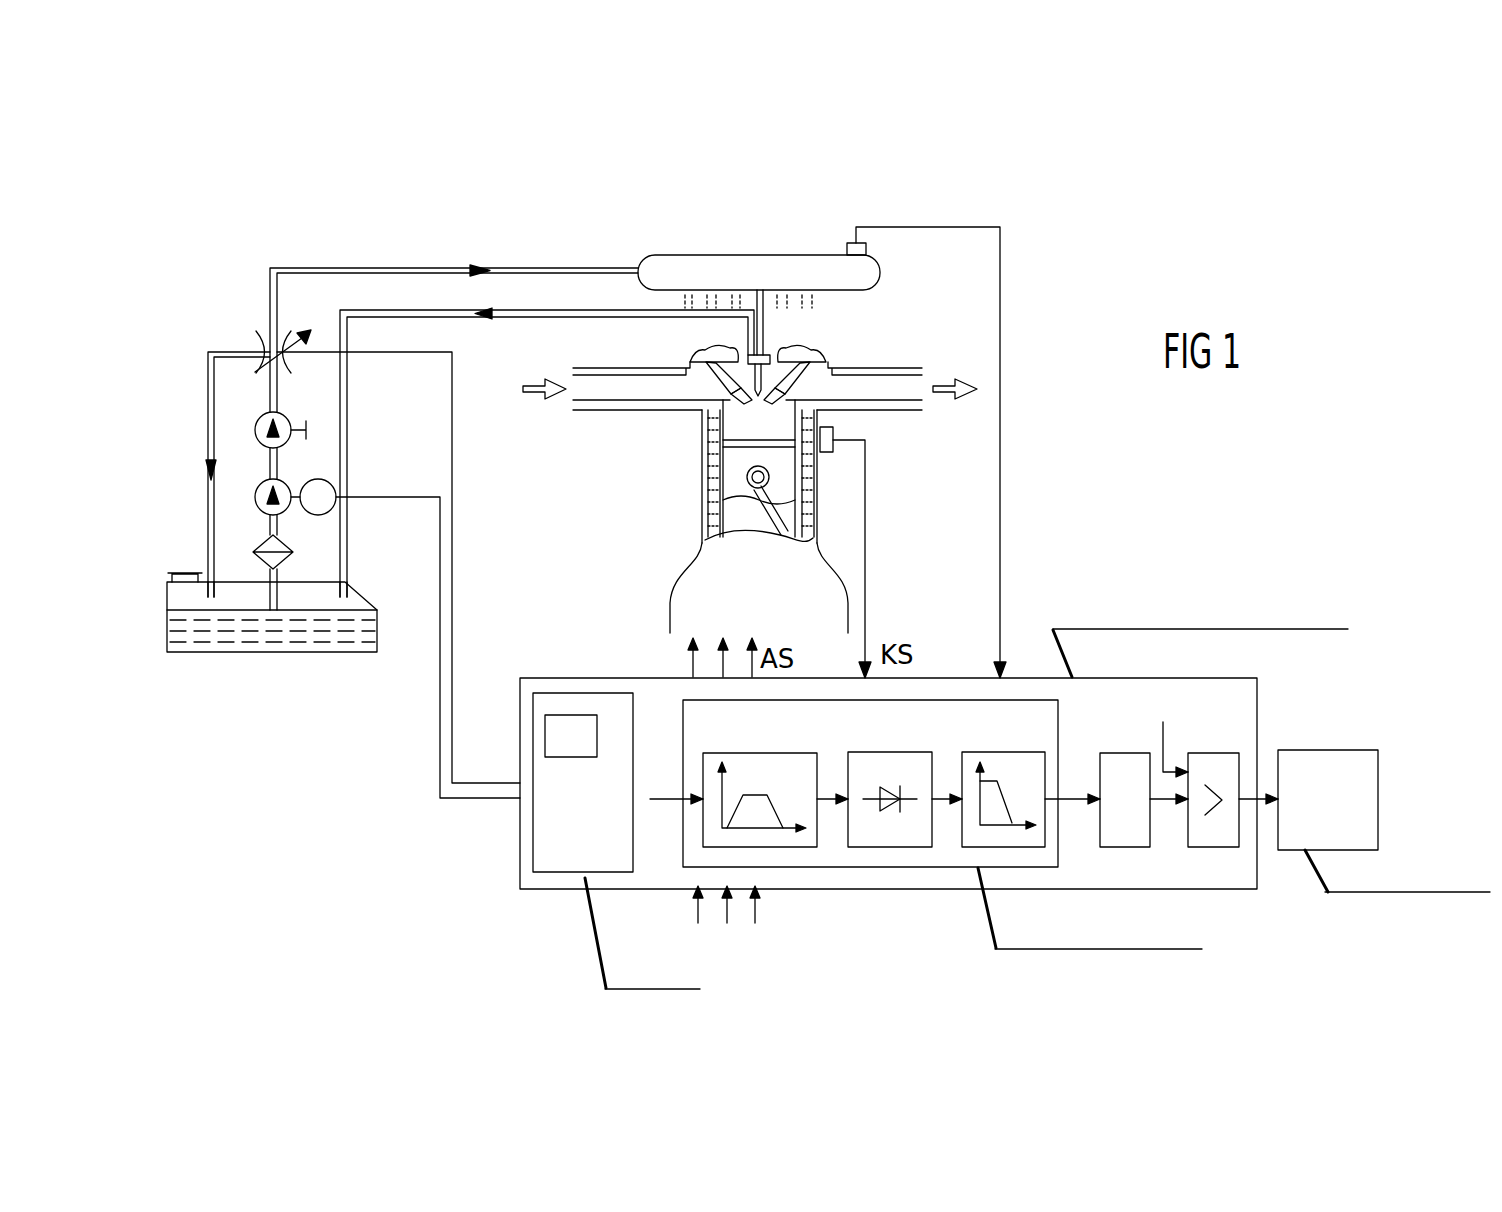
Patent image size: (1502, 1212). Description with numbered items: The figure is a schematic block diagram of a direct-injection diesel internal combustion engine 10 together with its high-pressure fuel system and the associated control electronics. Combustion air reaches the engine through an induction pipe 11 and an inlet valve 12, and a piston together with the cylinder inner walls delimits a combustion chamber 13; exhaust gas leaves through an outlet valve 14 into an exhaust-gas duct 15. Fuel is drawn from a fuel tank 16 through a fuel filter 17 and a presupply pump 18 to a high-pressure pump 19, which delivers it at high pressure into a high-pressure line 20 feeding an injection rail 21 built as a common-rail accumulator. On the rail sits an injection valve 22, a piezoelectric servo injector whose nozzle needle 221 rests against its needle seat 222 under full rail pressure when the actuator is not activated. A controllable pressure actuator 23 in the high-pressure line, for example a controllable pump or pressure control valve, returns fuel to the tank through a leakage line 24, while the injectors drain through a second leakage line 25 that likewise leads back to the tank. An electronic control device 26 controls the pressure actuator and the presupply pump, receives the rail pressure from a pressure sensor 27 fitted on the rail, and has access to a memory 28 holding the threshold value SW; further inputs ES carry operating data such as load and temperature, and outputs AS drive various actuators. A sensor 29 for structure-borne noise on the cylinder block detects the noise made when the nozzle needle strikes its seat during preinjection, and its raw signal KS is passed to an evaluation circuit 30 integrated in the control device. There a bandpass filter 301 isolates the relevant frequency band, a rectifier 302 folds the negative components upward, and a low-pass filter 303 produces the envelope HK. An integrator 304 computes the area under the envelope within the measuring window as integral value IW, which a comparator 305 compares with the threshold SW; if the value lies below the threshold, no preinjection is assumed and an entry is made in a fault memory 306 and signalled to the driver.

The diesel internal combustion engine 10 is at (851, 495).
The induction pipe 11 is at (590, 394).
The inlet valve 12 is at (718, 379).
The combustion chamber 13 is at (731, 436).
The outlet valve 14 is at (796, 362).
The exhaust-gas duct 15 is at (886, 375).
The fuel tank 16 is at (238, 646).
The fuel filter 17 is at (260, 544).
The presupply pump 18 is at (263, 482).
The high-pressure pump 19 is at (285, 412).
The high-pressure line 20 is at (538, 266).
The injection rail 21 is at (673, 262).
The injector 22 is at (764, 377).
The controllable pressure actuator 23 is at (262, 346).
The leakage line 24 is at (206, 400).
The second leakage line 25 is at (511, 318).
The electronic control device 26 is at (962, 882).
The pressure sensor 27 is at (846, 250).
The memory 28 is at (567, 862).
The sensor for structure-borne noise 29 is at (836, 434).
The evaluation circuit 30 is at (895, 862).
The nozzle needle 221 is at (730, 409).
The needle seat 222 is at (758, 393).
The bandpass filter 301 is at (795, 754).
The rectifier 302 is at (910, 754).
The low-pass filter 303 is at (1015, 754).
The integrator 304 is at (1115, 754).
The comparator 305 is at (1212, 754).
The fault memory 306 is at (1318, 750).